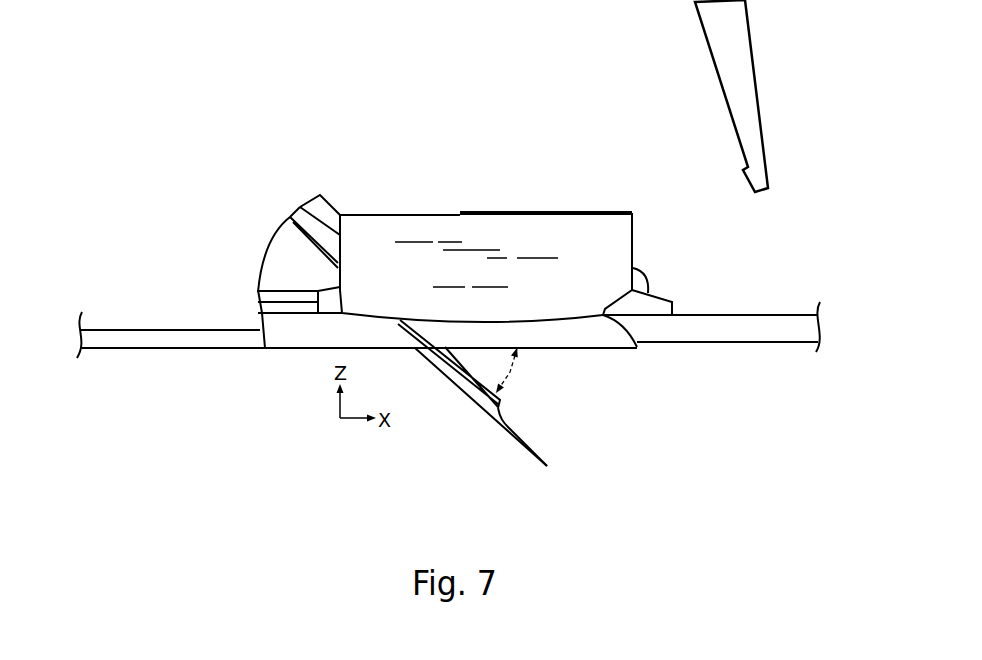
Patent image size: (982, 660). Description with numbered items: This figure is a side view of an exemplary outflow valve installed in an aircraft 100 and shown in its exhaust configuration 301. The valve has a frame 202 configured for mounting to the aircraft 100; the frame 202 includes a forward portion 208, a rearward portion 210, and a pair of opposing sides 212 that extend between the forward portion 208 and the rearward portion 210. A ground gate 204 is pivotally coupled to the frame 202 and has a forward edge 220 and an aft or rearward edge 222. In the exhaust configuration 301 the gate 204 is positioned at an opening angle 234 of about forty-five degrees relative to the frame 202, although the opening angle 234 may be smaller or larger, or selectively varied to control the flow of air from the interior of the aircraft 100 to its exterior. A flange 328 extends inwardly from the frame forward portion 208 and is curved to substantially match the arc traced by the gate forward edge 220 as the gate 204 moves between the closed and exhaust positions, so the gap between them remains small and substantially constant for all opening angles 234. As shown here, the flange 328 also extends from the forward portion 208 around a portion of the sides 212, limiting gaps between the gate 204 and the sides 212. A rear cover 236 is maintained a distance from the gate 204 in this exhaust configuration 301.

The aircraft 100 is at (107, 342).
The frame 202 is at (288, 350).
The ground gate 204 is at (478, 407).
The forward portion 208 is at (236, 311).
The rearward portion 210 is at (694, 297).
The opposing sides 212 is at (533, 305).
The forward edge 220 is at (313, 198).
The rearward edge 222 is at (550, 467).
The opening angle 234 is at (512, 371).
The rear cover 236 is at (758, 92).
The exhaust configuration 301 is at (593, 452).
The flange 328 is at (275, 263).